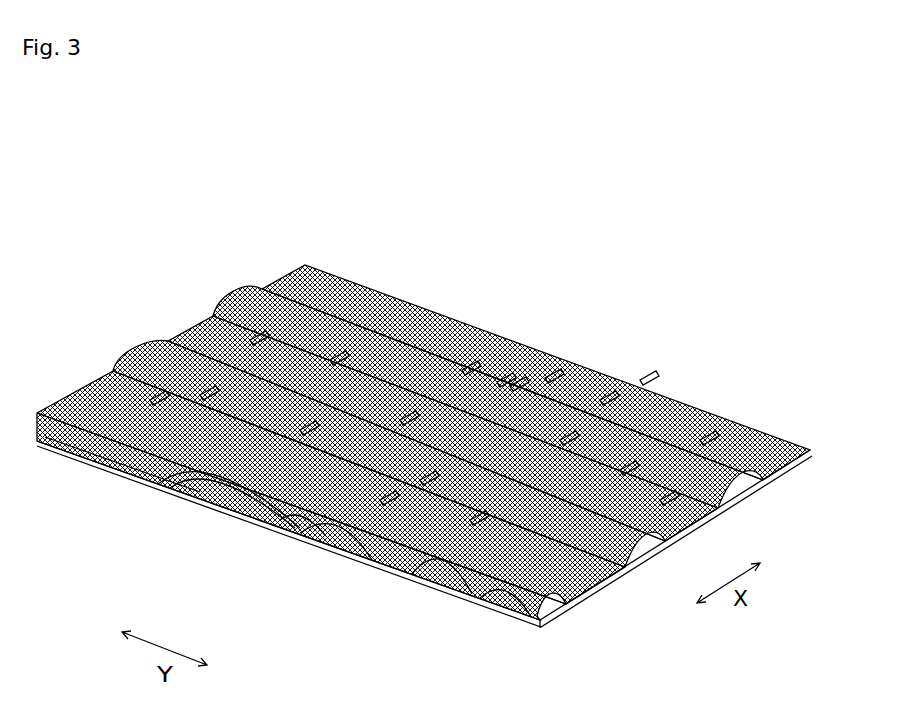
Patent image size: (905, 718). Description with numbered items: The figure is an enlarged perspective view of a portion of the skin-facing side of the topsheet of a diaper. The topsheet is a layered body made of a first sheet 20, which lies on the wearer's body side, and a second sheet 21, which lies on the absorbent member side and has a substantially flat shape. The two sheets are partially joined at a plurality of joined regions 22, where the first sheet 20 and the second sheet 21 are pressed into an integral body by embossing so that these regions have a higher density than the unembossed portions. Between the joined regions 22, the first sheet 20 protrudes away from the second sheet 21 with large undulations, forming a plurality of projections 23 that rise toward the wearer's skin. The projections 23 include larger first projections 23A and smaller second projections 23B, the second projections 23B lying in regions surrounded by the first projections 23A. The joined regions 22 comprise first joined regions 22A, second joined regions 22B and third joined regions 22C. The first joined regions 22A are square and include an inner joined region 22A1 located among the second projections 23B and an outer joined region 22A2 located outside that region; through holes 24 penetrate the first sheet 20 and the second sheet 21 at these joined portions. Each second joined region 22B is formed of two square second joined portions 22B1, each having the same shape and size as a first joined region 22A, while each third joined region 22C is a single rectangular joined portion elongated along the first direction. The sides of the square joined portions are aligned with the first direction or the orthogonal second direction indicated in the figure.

The first sheet 20 is at (173, 478).
The second sheet 21 is at (200, 498).
The joined regions 22 is at (438, 358).
The first joined regions 22A is at (678, 212).
The second joined regions 22B is at (538, 208).
The third joined regions 22C is at (293, 282).
The inner joined region 22A1 is at (552, 373).
The outer joined region 22A2 is at (515, 378).
The second joined portion 22B1 is at (473, 362).
The projections 23 is at (514, 400).
The first projections 23A is at (733, 410).
The second projections 23B is at (623, 382).
The through holes 24 is at (300, 530).